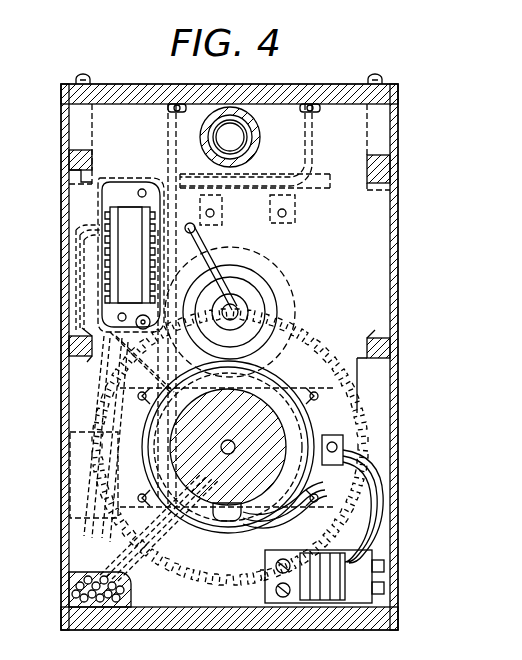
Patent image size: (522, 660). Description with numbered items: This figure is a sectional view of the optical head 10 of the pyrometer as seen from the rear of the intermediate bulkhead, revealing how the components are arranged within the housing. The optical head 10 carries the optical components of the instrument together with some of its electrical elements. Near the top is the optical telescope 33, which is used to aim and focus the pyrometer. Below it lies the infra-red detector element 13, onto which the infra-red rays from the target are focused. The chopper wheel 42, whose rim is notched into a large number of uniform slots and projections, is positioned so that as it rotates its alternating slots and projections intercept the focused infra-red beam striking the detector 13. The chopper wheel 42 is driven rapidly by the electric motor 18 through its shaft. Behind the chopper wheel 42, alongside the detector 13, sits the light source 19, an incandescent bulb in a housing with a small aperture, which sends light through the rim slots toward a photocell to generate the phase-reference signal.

The optical head 10 is at (398, 248).
The infra-red detector element 13 is at (240, 302).
The electric motor 18 is at (248, 427).
The light source 19 is at (75, 499).
The optical telescope 33 is at (249, 124).
The chopper wheel 42 is at (329, 348).